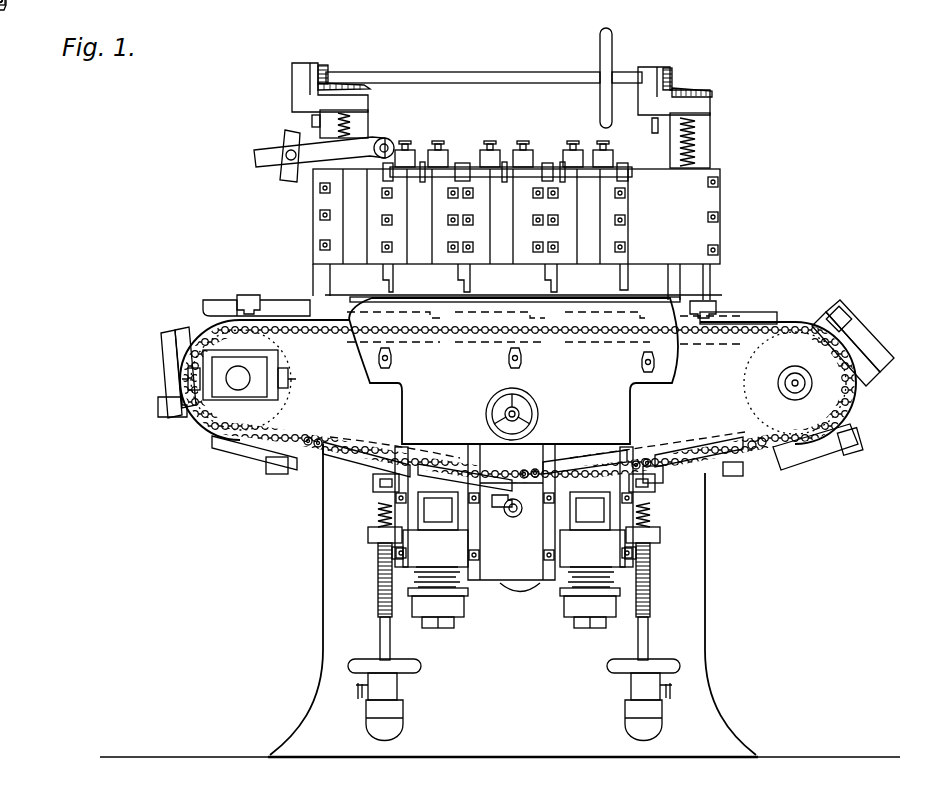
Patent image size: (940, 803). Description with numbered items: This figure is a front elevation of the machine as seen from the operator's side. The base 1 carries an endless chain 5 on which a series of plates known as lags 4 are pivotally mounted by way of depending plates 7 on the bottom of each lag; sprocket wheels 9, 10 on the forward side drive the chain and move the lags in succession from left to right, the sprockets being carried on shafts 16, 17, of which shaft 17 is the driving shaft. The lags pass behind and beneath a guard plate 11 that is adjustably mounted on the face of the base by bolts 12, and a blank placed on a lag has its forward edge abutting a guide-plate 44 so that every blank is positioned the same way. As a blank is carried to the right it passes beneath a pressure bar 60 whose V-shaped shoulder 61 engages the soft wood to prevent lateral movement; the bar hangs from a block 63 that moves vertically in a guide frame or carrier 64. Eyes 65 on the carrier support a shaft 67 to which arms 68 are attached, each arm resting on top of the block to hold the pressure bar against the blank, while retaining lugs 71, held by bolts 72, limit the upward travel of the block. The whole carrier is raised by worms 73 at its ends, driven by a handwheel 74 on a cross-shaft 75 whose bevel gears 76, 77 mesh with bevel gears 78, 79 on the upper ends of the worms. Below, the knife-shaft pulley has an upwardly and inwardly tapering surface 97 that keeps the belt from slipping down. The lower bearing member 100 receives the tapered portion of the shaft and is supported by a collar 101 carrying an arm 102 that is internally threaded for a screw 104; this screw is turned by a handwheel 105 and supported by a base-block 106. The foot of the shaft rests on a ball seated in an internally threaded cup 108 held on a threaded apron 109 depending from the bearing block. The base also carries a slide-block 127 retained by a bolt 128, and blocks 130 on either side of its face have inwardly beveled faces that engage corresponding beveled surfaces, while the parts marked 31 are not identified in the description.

The base 1 is at (707, 572).
The lags 4 is at (164, 336).
The endless chain 5 is at (306, 448).
The depending plate 7 is at (183, 333).
The sprocket wheel 9 is at (793, 347).
The sprocket wheel 10 is at (200, 432).
The guard plate 11 is at (600, 385).
The bolts 12 is at (657, 367).
The shaft 16 is at (238, 378).
The driving shaft 17 is at (798, 383).
The clamp block 31 is at (248, 300).
The guide-plate 44 is at (212, 304).
The pressure bar 60 is at (322, 280).
The V-shaped shoulder 61 is at (348, 299).
The block 63 is at (350, 194).
The guide frame 64 is at (313, 230).
The eyes 65 is at (463, 165).
The shaft 67 is at (448, 170).
The arms 68 is at (423, 166).
The retaining lugs 71 is at (415, 165).
The bolts or screws 72 is at (405, 150).
The worms 73 is at (352, 128).
The handwheel 74 is at (612, 34).
The cross-shaft 75 is at (522, 78).
The bevel gear 76 is at (323, 68).
The bevel gear 77 is at (672, 70).
The bevel gear 78 is at (348, 83).
The bevel gear 79 is at (700, 93).
The tapering surface 97 is at (428, 509).
The bearing member 100 is at (460, 529).
The collar 101 is at (392, 551).
The arm 102 is at (368, 537).
The screw 104 is at (378, 610).
The handwheel 105 is at (352, 661).
The base-block 106 is at (368, 710).
The internally threaded cup 108 is at (436, 621).
The threaded apron 109 is at (458, 593).
The slide-block 127 is at (520, 566).
The bolt 128 is at (513, 518).
The blocks 130 is at (375, 489).